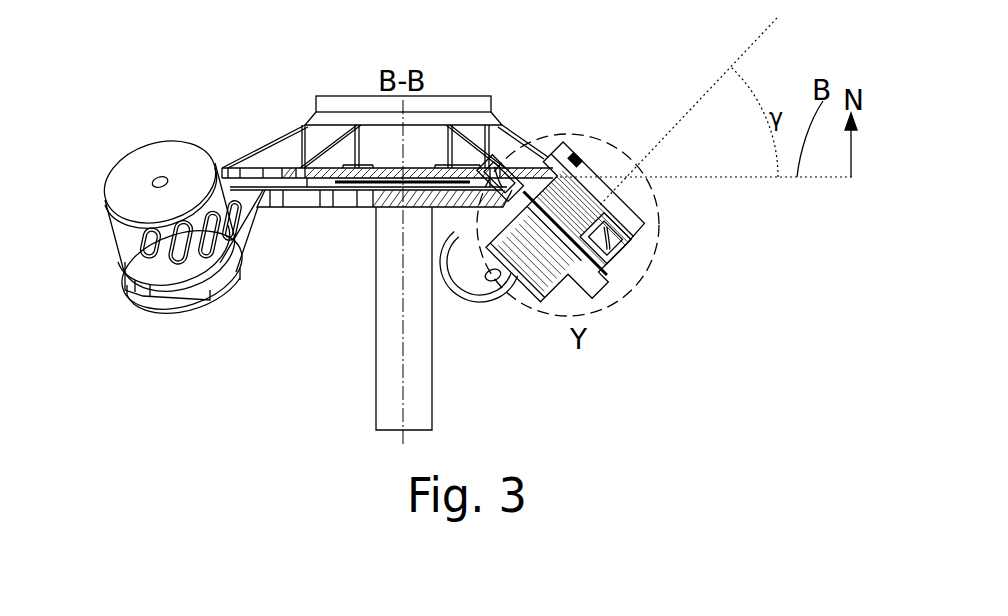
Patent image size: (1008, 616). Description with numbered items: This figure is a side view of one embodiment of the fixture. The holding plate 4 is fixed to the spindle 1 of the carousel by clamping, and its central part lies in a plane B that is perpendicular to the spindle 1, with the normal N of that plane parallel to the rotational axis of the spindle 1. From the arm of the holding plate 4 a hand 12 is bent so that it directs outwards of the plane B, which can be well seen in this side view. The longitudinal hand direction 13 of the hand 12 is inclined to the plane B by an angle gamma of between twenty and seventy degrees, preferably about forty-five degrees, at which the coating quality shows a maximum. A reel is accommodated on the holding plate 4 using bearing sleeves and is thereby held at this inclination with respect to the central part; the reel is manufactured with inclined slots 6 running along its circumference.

The spindle 1 is at (413, 377).
The holding plate 4 is at (185, 290).
The slot 6 is at (125, 255).
The hand 12 is at (233, 275).
The longitudinal hand direction 13 is at (748, 44).